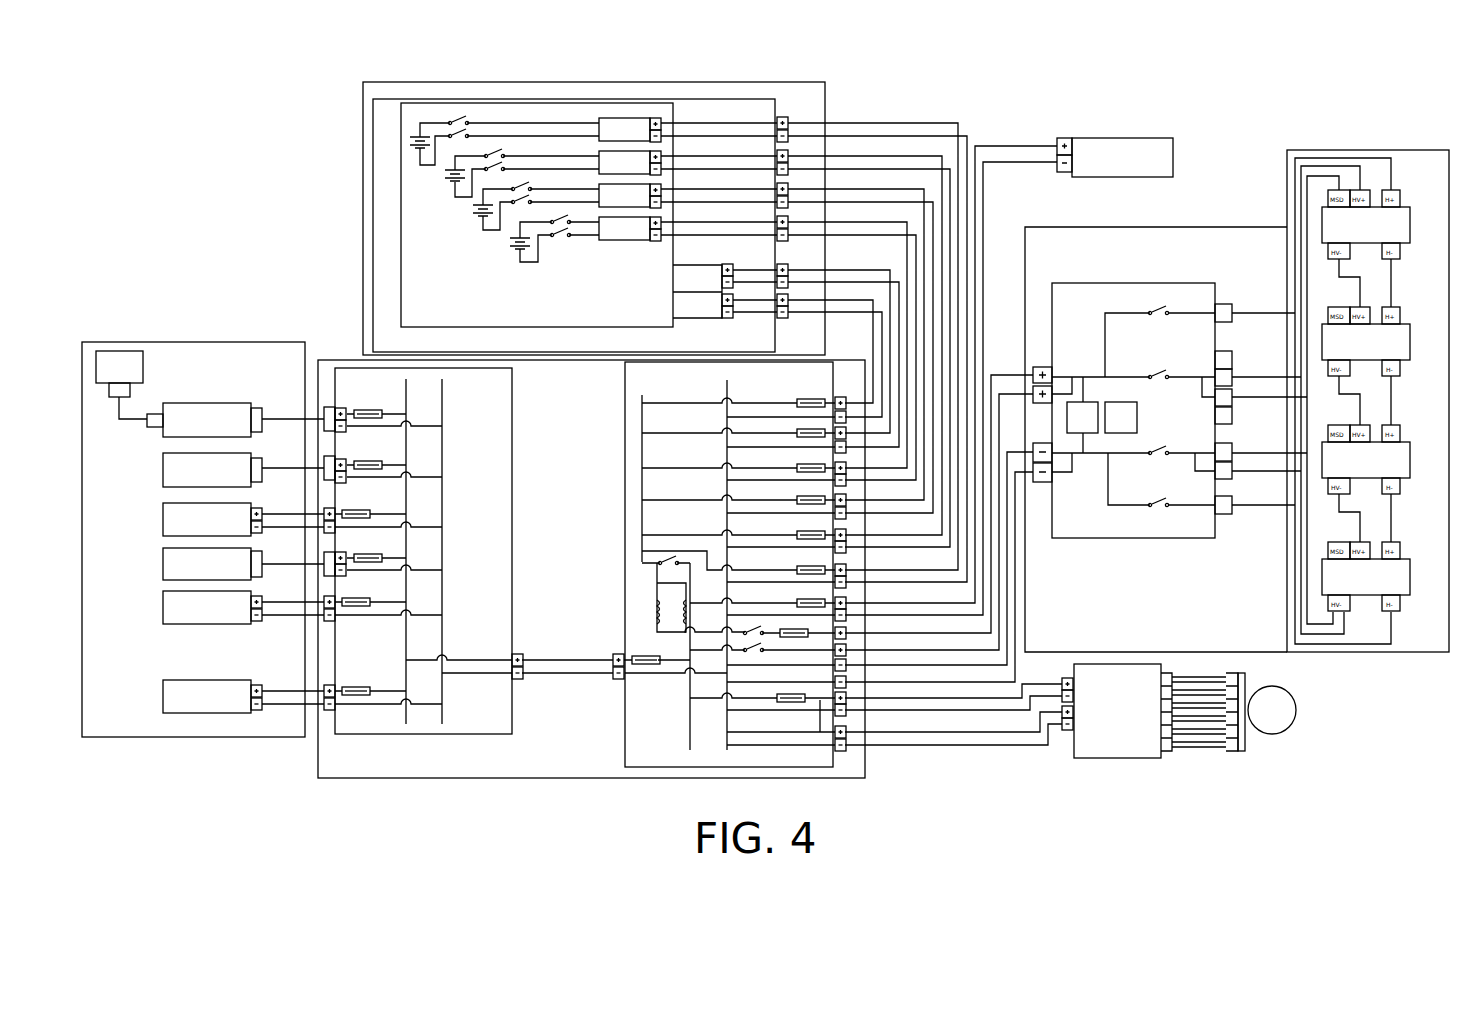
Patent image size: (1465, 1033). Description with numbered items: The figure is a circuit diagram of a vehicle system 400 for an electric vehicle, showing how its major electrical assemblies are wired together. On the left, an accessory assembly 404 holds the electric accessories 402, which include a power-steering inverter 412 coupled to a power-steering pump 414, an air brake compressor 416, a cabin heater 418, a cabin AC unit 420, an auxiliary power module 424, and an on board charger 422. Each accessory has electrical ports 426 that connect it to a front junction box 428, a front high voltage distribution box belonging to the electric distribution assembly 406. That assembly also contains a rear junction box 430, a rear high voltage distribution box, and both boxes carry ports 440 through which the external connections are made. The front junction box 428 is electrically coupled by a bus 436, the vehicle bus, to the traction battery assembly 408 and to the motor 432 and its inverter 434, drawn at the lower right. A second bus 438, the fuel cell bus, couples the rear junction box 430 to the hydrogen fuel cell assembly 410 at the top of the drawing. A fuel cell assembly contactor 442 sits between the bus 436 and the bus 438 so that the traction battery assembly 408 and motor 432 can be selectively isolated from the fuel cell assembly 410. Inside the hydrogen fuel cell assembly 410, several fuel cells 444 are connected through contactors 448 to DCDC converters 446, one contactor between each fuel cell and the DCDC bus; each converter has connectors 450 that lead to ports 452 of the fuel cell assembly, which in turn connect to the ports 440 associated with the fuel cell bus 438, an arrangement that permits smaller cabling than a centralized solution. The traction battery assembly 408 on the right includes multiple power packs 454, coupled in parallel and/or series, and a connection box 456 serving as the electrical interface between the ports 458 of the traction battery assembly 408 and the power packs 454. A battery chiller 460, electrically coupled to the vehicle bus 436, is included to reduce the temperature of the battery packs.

The vehicle system 400 is at (182, 158).
The electric accessories 402 is at (207, 386).
The accessory assembly 404 is at (126, 342).
The electric distribution assembly 406 is at (330, 779).
The traction battery assembly 408 is at (1088, 227).
The hydrogen fuel cell assembly 410 is at (414, 82).
The power-steering inverter 412 is at (183, 403).
The power-steering pump 414 is at (140, 380).
The air brake compressor 416 is at (163, 469).
The cabin heater 418 is at (163, 519).
The cabin AC unit 420 is at (163, 563).
The on board charger 422 is at (163, 700).
The auxiliary power module 424 is at (163, 605).
The electrical ports 426 is at (256, 624).
The front junction box 428 is at (349, 734).
The rear junction box 430 is at (623, 763).
The motor 432 is at (1270, 736).
The inverter 434 is at (1118, 758).
The bus 436 is at (688, 720).
The bus 438 is at (640, 421).
The ports 440 is at (835, 399).
The fuel cell assembly contactor 442 is at (644, 575).
The fuel cells 444 is at (434, 176).
The DCDC converters 446 is at (628, 110).
The contactors 448 is at (462, 104).
The connectors 450 is at (657, 117).
The ports 452 is at (782, 116).
The power packs 454 is at (1410, 242).
The connection box 456 is at (1153, 283).
The ports 458 is at (1042, 356).
The battery chiller 460 is at (1157, 136).